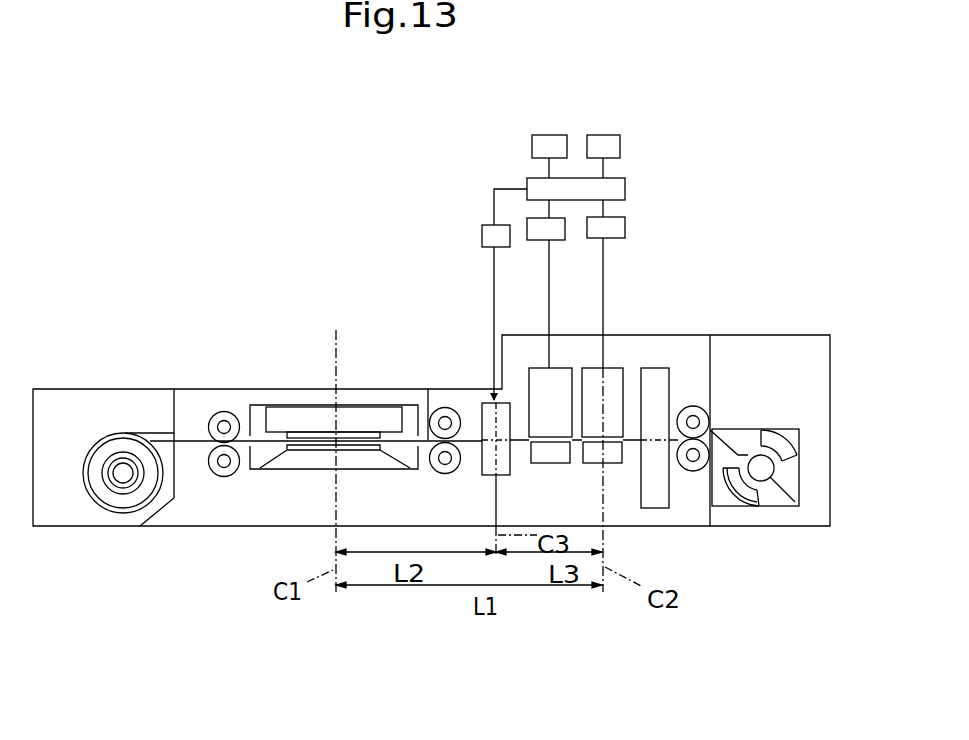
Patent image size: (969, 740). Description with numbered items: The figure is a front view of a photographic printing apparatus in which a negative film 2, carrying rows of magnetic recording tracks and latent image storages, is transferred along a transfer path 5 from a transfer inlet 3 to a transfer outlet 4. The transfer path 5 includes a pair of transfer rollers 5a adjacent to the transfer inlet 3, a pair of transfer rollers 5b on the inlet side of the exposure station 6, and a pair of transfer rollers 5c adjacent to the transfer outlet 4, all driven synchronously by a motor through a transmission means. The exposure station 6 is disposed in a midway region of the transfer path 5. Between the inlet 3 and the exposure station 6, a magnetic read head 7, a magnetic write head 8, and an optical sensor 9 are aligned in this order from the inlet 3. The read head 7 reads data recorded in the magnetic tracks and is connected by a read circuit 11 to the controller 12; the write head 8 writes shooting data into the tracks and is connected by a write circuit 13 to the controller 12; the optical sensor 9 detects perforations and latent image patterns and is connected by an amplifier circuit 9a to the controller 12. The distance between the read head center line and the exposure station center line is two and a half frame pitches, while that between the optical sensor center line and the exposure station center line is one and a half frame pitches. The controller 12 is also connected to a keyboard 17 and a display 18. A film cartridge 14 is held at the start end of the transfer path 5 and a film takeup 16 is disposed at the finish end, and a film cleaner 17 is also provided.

The negative film 2 is at (632, 438).
The transfer inlet 3 is at (713, 420).
The transfer outlet 4 is at (192, 442).
The transfer path 5 is at (432, 408).
The transfer rollers 5a is at (678, 437).
The transfer rollers 5b is at (462, 473).
The transfer rollers 5c is at (218, 438).
The exposure station 6 is at (298, 460).
The magnetic read head 7 is at (612, 366).
The magnetic write head 8 is at (557, 366).
The optical sensor 9 is at (484, 400).
The amplifier circuit 9a is at (483, 232).
The read circuit 11 is at (620, 230).
The controller 12 is at (620, 188).
The write circuit 13 is at (540, 240).
The film cartridge 14 is at (782, 428).
The film takeup 16 is at (110, 502).
The keyboard 17 is at (545, 135).
The display 18 is at (600, 135).